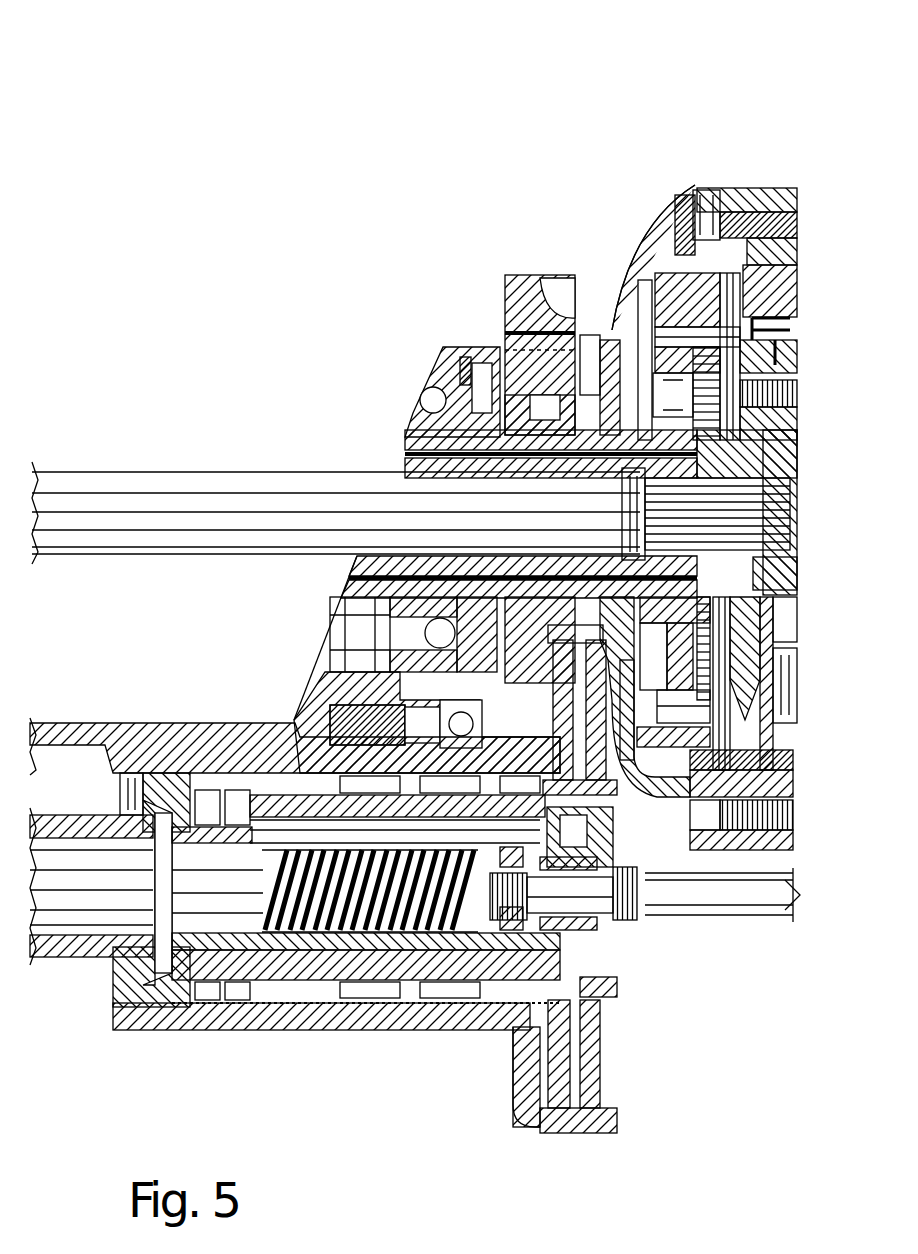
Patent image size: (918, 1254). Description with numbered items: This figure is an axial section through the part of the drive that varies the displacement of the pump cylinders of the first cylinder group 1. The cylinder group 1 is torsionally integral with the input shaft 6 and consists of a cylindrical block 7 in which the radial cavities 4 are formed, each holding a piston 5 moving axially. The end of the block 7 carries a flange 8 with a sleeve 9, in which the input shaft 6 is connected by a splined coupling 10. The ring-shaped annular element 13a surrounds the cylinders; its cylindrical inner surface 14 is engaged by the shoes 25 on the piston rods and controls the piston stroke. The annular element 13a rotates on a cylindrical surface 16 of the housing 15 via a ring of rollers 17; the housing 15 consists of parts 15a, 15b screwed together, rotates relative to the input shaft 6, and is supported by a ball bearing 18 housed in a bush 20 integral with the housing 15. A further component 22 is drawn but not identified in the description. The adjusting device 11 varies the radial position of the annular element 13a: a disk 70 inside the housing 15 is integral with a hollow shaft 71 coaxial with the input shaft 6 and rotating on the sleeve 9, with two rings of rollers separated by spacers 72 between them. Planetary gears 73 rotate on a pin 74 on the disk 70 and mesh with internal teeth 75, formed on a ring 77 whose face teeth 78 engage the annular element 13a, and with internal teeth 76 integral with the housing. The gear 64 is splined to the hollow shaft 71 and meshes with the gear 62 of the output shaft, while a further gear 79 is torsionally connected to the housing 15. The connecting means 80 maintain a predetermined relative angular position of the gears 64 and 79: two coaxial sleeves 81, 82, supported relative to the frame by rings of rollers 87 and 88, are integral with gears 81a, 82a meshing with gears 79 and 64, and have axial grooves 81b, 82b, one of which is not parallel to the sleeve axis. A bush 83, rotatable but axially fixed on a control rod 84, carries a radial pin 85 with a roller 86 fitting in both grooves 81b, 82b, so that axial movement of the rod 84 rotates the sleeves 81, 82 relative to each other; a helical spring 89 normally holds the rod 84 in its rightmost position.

The first group of cylinders 1 is at (772, 167).
The radial cavity 4 is at (797, 616).
The piston 5 is at (797, 688).
The input shaft 6 is at (185, 505).
The block 7 is at (795, 420).
The flange 8 is at (792, 443).
The sleeve 9 is at (355, 562).
The splined coupling 10 is at (750, 525).
The adjusting device 11 is at (655, 810).
The annular element 13a is at (800, 280).
The inner surface 14 is at (798, 333).
The housing 15 is at (647, 230).
The housing part 15a is at (642, 265).
The housing part 15b is at (740, 790).
The cylindrical surface 16 is at (795, 785).
The ring of rollers 17 is at (790, 268).
The ball bearing 18 is at (430, 385).
The bush 20 is at (325, 660).
The sleeve 22 is at (590, 440).
The shoe 25 is at (795, 752).
The gear 62 is at (510, 303).
The gear 64 is at (505, 378).
The disk 70 is at (685, 300).
The hollow shaft 71 is at (505, 600).
The spacers 72 is at (583, 353).
The planetary gears 73 is at (705, 270).
The pin 74 is at (722, 320).
The internal teeth 75 is at (745, 800).
The internal teeth 76 is at (665, 800).
The ring 77 is at (795, 772).
The face teeth 78 is at (785, 832).
The further gear 79 is at (623, 290).
The connecting means 80 is at (398, 1058).
The sleeve 81 is at (438, 1008).
The gear 81a is at (600, 1133).
The axial groove 81b is at (270, 1008).
The sleeve 82 is at (455, 1008).
The gear 82a is at (540, 1130).
The axial groove 82b is at (310, 1008).
The bush 83 is at (610, 935).
The control rod 84 is at (795, 915).
The radial pin 85 is at (622, 838).
The roller 86 is at (555, 800).
The rings of rollers 87 is at (345, 735).
The rings of rollers 88 is at (228, 1012).
The helical spring 89 is at (372, 1000).